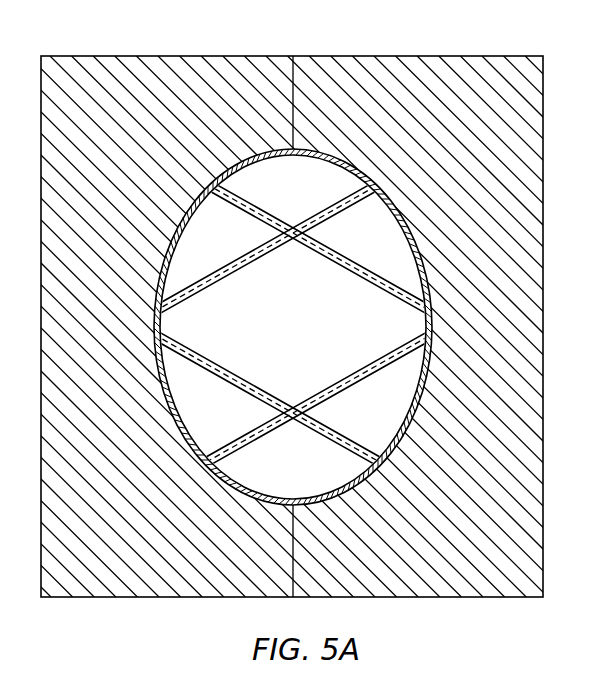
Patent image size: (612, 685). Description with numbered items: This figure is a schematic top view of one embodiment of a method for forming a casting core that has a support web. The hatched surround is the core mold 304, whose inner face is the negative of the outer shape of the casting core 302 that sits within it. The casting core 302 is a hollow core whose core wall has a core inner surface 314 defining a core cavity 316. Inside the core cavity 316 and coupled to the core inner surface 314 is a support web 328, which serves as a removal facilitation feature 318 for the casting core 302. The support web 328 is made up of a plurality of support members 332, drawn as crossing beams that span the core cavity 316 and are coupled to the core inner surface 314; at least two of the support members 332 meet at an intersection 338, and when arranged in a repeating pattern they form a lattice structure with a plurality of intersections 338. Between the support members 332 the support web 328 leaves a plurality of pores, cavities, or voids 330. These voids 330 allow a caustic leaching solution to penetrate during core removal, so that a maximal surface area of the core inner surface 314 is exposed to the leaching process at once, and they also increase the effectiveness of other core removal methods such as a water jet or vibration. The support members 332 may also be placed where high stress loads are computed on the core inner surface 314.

The core mold 304 is at (519, 25).
The casting core 302 is at (293, 327).
The core inner surface 314 is at (395, 425).
The core cavity 316 is at (384, 338).
The support members 332 is at (340, 203).
The pores, cavities, or voids 330 is at (381, 246).
The intersection 338 is at (293, 238).
The removal facilitation feature 318 is at (285, 351).
The support web 328 is at (285, 351).